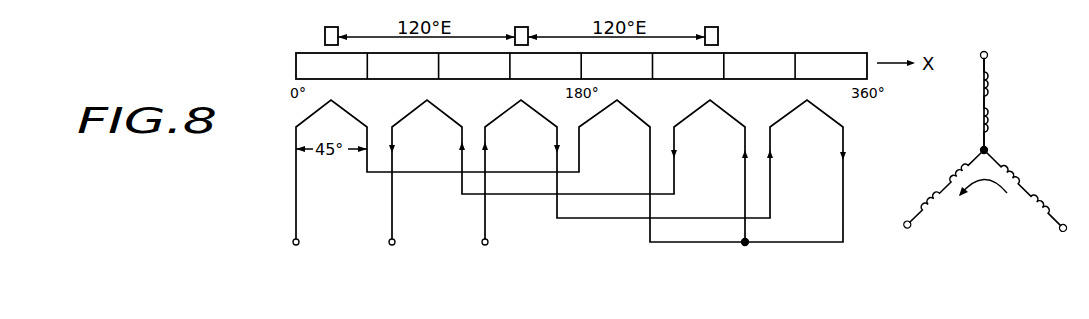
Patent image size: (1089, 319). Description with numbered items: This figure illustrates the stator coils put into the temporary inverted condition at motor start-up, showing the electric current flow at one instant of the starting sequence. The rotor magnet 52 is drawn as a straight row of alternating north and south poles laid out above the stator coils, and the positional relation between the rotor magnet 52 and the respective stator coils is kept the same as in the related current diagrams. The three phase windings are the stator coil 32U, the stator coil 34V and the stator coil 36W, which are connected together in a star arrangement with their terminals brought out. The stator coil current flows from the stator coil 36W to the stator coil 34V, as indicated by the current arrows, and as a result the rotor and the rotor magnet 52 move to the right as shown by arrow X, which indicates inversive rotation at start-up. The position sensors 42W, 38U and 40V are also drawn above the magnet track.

The W-phase position sensor 42W is at (330, 23).
The U-phase position sensor 38U is at (518, 22).
The V-phase position sensor 40V is at (708, 23).
The rotor magnet 52 is at (815, 53).
The stator coil 32U is at (631, 164).
The stator coil 34V is at (679, 187).
The stator coil 36W is at (772, 187).